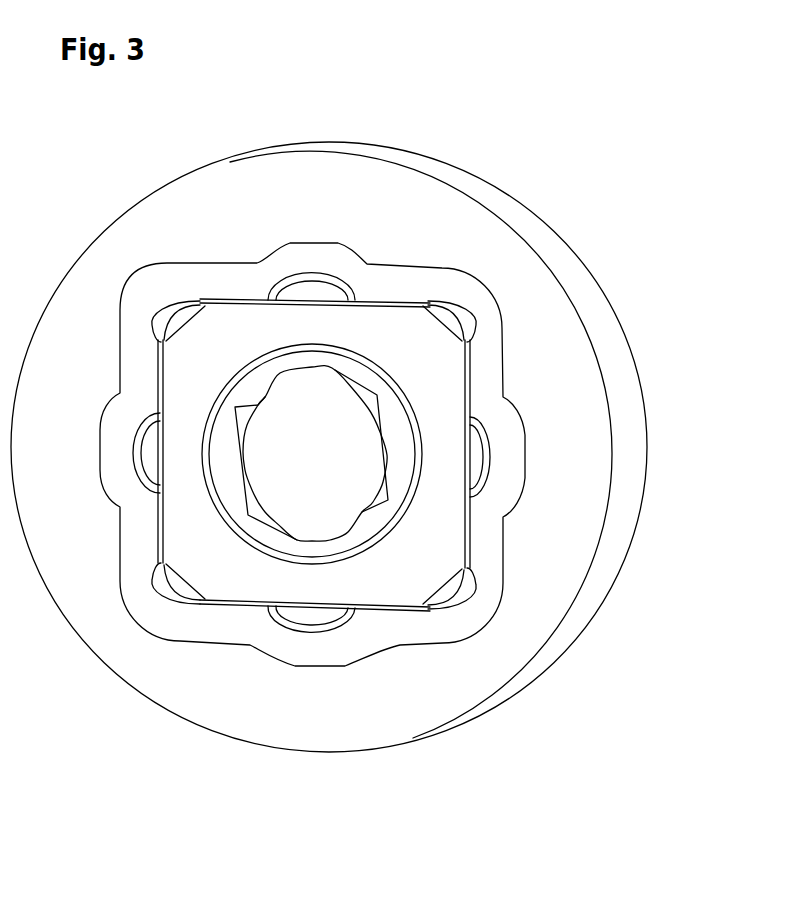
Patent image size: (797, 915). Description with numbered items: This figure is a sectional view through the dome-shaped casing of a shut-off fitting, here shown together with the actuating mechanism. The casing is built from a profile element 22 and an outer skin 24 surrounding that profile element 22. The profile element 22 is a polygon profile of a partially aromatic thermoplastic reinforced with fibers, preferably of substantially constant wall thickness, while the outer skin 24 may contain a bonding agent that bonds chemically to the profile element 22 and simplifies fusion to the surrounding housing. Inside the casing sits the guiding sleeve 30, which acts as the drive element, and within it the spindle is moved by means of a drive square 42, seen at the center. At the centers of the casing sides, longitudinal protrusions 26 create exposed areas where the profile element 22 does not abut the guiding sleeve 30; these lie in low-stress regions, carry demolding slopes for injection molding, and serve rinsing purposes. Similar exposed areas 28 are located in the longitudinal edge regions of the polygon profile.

The profile element 22 is at (222, 280).
The outer skin 24 is at (397, 222).
The protrusions 26 is at (316, 647).
The exposed areas 28 is at (157, 615).
The guiding sleeve 30 is at (413, 565).
The drive square 42 is at (298, 463).